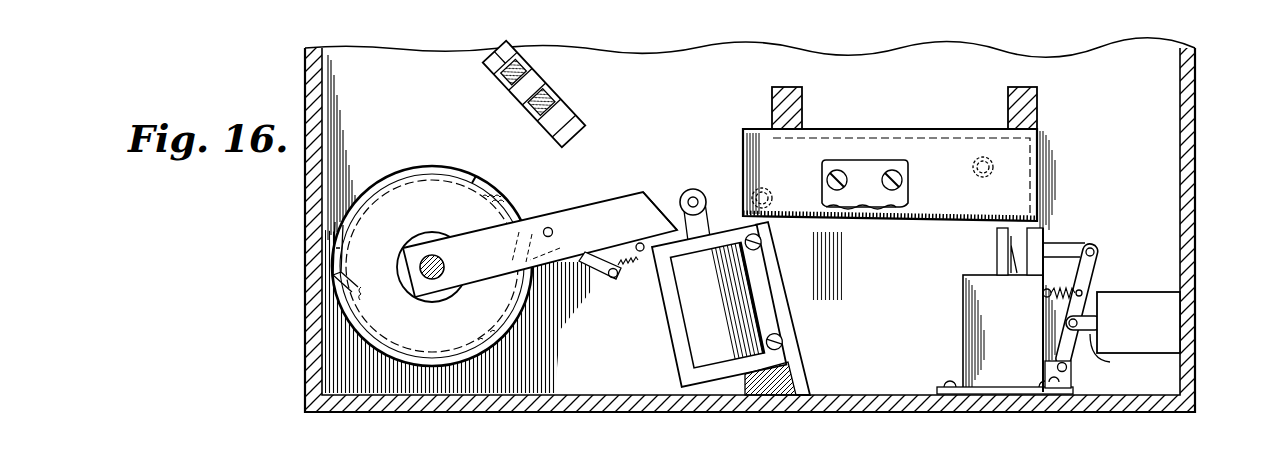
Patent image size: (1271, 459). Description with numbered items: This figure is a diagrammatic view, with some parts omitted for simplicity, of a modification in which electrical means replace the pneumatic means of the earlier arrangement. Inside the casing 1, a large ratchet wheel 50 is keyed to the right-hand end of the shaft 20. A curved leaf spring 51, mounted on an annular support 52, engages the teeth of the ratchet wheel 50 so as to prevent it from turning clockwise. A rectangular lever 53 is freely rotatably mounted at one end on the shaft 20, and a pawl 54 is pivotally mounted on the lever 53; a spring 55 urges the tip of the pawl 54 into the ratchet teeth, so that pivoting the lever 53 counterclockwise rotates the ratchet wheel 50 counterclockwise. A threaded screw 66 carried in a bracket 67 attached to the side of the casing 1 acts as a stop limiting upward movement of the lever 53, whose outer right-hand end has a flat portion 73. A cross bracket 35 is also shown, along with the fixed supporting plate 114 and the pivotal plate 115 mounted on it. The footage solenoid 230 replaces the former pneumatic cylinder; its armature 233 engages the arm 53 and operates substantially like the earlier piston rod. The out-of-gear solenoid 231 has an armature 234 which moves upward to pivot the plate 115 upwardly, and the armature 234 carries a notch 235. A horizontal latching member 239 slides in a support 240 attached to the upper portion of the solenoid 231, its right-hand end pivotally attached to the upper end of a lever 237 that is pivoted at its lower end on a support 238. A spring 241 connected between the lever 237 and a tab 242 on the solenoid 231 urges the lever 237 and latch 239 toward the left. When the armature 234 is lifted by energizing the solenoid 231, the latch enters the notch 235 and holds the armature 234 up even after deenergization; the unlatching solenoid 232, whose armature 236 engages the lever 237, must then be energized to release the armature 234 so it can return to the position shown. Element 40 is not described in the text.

The casing 1 is at (560, 413).
The shaft 20 is at (431, 256).
The cross bracket 35 is at (772, 93).
The support block 40 is at (1037, 96).
The ratchet wheel 50 is at (498, 203).
The curved leaf spring 51 is at (352, 278).
The annular support 52 is at (441, 164).
The rectangular lever 53 is at (583, 203).
The pawl 54 is at (592, 274).
The spring 55 is at (638, 271).
The threaded screw 66 is at (492, 63).
The bracket 67 is at (533, 117).
The flat portion 73 is at (650, 192).
The fixed supporting plate 114 is at (1027, 162).
The pivotal plate 115 is at (1043, 221).
The footage solenoid 230 is at (700, 331).
The out-of-gear solenoid 231 is at (975, 317).
The unlatching solenoid 232 is at (1170, 312).
The armature 233 is at (693, 188).
The armature 234 is at (998, 241).
The notch 235 is at (1010, 258).
The armature 236 is at (1110, 362).
The lever 237 is at (1098, 268).
The support 238 is at (1074, 380).
The horizontal latching member 239 is at (1070, 245).
The support 240 is at (1048, 240).
The spring 241 is at (1083, 300).
The tab 242 is at (1043, 295).